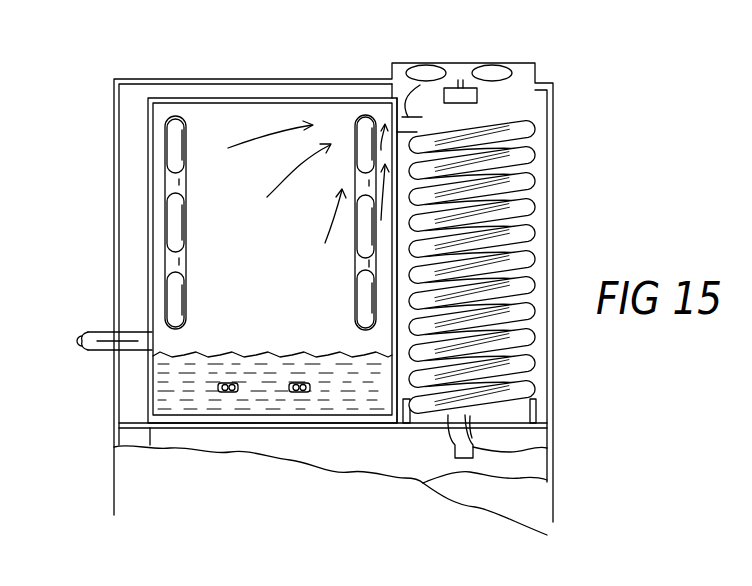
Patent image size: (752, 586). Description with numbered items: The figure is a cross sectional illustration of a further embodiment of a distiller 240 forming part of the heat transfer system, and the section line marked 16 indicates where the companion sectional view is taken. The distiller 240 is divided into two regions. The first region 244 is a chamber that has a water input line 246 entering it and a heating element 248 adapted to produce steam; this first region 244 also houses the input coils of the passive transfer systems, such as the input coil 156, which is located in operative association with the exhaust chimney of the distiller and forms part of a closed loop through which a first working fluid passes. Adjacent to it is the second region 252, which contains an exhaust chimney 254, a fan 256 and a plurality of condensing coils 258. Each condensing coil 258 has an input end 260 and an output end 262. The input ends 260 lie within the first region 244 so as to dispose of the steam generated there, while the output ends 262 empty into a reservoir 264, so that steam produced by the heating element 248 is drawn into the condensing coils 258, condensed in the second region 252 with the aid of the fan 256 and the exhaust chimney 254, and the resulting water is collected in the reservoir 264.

The section line 16- 16 is at (285, 34).
The input coil 156 is at (172, 160).
The distiller 240 is at (272, 79).
The first region 244 is at (215, 134).
The water input line 246 is at (97, 333).
The heating element 248 is at (225, 392).
The second region 252 is at (535, 117).
The exhaust chimney 254 is at (530, 71).
The fan 256 is at (497, 77).
The condensing coils 258 is at (527, 218).
The input end 260 is at (423, 66).
The output end 262 is at (547, 448).
The reservoir 264 is at (547, 535).